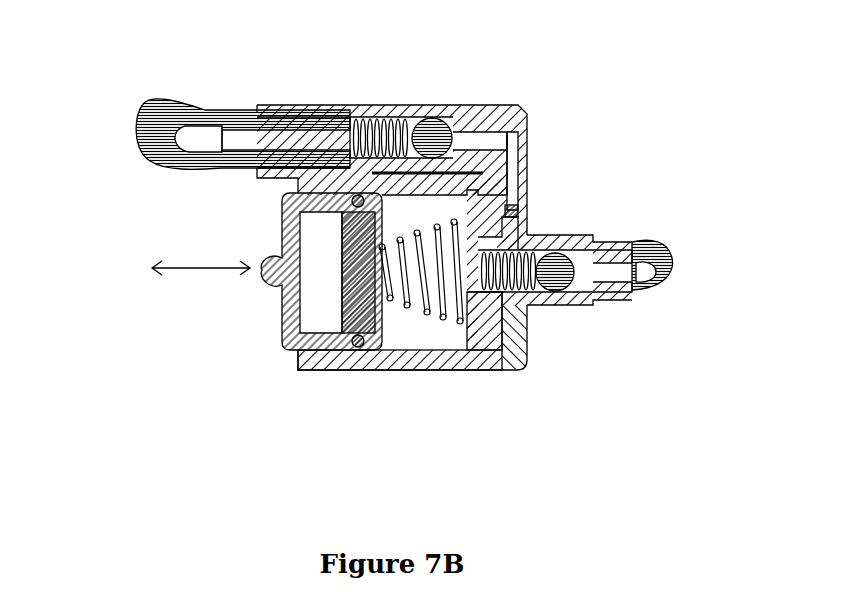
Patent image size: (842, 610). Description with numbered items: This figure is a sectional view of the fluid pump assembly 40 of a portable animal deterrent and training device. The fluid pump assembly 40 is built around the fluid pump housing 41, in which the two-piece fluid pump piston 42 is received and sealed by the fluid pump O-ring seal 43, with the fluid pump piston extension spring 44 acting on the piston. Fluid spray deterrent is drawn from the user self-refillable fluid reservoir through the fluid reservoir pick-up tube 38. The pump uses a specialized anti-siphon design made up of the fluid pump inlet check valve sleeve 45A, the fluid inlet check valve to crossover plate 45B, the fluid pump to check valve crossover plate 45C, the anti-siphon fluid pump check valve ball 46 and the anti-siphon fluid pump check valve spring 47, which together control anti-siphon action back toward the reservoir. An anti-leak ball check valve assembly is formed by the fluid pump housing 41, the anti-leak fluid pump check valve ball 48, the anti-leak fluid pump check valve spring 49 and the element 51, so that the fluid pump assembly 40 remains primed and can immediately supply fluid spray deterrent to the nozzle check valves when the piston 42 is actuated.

The fluid reservoir pick-up tube 38 is at (645, 290).
The fluid pump assembly 40 is at (202, 380).
The fluid pump housing 41 is at (493, 107).
The fluid pump piston 42 is at (285, 290).
The fluid pump O-ring seal 43 is at (360, 340).
The fluid pump piston extension spring 44 is at (443, 318).
The fluid pump inlet check valve sleeve 45A is at (522, 222).
The fluid inlet check valve to crossover plate 45B is at (478, 362).
The fluid pump to check valve crossover plate 45C is at (520, 368).
The fluid pump check valve ball (anti-siphon) 46 is at (575, 240).
The fluid pump check valve spring (anti-siphon) 47 is at (537, 303).
The fluid pump check valve ball (anti-leak) 48 is at (452, 112).
The fluid pump check valve spring (anti-leak) 49 is at (376, 120).
The ball check valve assembly component 51 is at (148, 100).